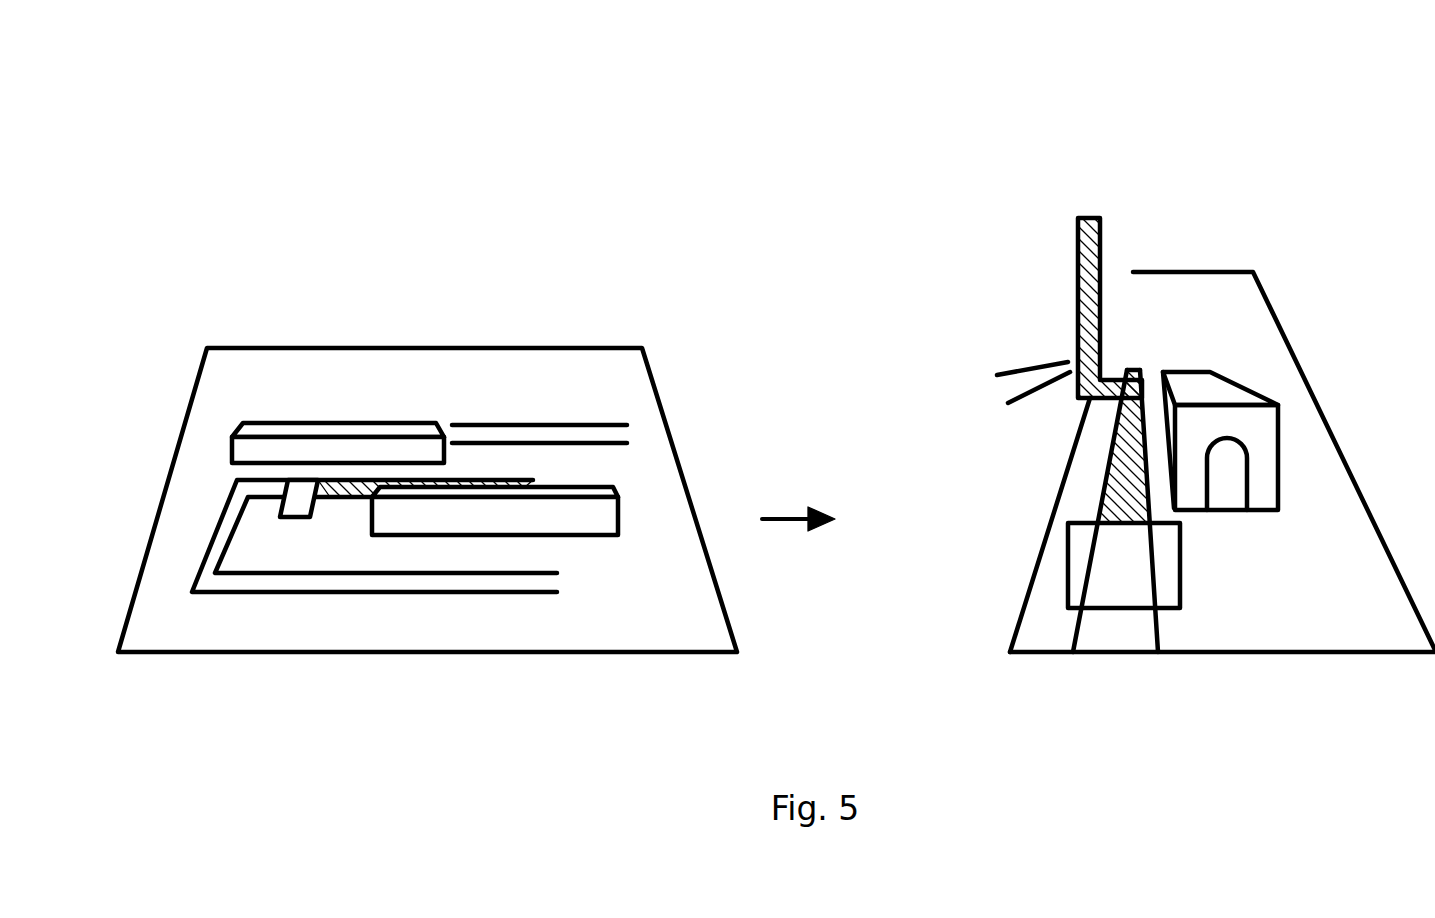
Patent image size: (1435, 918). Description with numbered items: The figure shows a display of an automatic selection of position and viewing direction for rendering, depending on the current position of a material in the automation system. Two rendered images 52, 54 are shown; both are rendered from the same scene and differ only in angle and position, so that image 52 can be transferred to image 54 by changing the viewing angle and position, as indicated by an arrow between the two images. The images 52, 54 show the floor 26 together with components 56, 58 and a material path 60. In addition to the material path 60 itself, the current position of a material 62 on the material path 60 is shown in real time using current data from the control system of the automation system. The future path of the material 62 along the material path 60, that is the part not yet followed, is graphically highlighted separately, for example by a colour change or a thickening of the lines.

The rendered image 52 is at (359, 250).
The rendered image 54 is at (1171, 215).
The floor 26 is at (607, 348).
The component 56 is at (270, 421).
The component 58 is at (582, 525).
The material path 60 is at (348, 594).
The material 62 is at (291, 518).